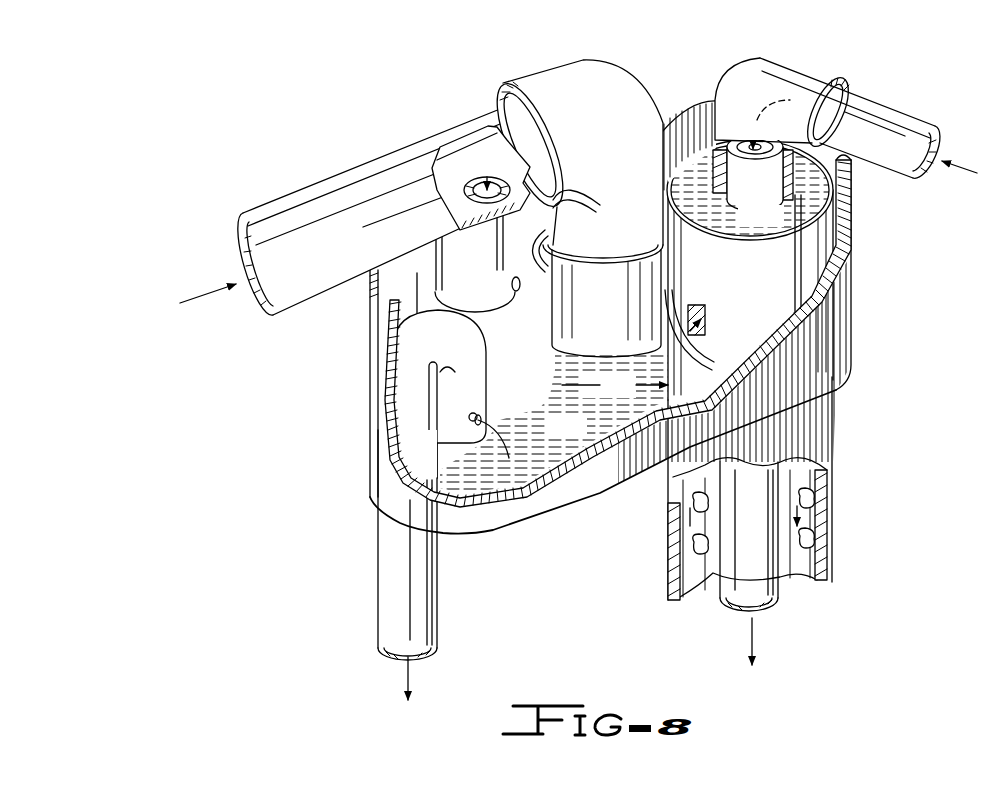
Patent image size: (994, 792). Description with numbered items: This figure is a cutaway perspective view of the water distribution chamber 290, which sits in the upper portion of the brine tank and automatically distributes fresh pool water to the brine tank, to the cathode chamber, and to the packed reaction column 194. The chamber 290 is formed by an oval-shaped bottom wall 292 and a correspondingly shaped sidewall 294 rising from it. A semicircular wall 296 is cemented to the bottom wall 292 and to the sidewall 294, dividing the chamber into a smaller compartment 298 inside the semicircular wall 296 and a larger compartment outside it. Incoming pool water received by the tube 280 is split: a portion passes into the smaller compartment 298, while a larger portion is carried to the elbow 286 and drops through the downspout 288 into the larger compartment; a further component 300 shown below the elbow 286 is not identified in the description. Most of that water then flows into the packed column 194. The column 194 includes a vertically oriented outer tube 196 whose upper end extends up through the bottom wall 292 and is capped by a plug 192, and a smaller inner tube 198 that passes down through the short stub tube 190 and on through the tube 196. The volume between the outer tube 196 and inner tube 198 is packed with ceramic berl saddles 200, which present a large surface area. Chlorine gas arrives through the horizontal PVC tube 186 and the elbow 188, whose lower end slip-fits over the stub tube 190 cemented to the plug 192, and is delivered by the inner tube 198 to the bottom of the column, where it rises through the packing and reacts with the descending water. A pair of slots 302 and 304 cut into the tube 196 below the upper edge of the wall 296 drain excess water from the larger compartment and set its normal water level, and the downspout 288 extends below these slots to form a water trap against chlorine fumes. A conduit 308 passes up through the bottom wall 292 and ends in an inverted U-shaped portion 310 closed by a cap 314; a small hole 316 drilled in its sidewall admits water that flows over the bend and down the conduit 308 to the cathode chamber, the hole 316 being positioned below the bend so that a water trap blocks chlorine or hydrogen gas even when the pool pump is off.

The horizontally-oriented PVC tube 186 is at (887, 120).
The elbow 188 is at (785, 72).
The stub tube 190 is at (750, 192).
The plug 192 is at (693, 163).
The packed reaction column 194 is at (836, 487).
The vertically-oriented tube 196 is at (808, 277).
The smaller vertical tube 198 is at (787, 588).
The ceramic berl saddles 200 is at (817, 507).
The tube 280 is at (310, 190).
The elbow 286 is at (607, 76).
The downspout 288 is at (615, 388).
The water distribution chamber 290 is at (858, 340).
The bottom wall 292 is at (493, 495).
The sidewall 294 is at (851, 224).
The semicircular wall 296 is at (565, 426).
The smaller compartment 298 is at (520, 260).
The cylinder 300 is at (548, 270).
The slot 302 is at (692, 325).
The slot 304 is at (793, 310).
The conduit 308 is at (378, 583).
The inverted U-shaped portion 310 is at (405, 333).
The cap 314 is at (452, 430).
The small hole 316 is at (469, 418).